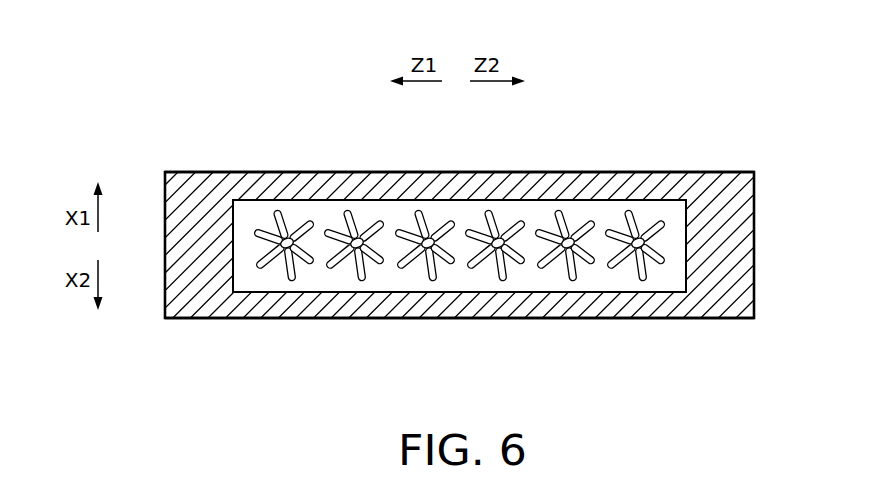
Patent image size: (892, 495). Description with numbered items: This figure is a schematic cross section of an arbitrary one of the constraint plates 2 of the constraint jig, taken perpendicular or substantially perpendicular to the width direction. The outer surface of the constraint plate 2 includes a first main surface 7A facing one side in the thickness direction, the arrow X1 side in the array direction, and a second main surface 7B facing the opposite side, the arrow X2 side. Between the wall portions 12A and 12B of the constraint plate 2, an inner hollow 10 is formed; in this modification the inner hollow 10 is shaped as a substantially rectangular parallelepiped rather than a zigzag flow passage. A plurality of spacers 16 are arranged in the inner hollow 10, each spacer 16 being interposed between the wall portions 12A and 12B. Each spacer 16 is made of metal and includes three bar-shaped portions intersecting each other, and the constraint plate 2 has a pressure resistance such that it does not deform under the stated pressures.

The constraint plate 2 is at (753, 92).
The first main surface 7A is at (500, 172).
The second main surface 7B is at (456, 320).
The inner hollow 10 is at (388, 279).
The wall portion 12A is at (606, 187).
The wall portion 12B is at (535, 303).
The spacer 16 is at (282, 210).